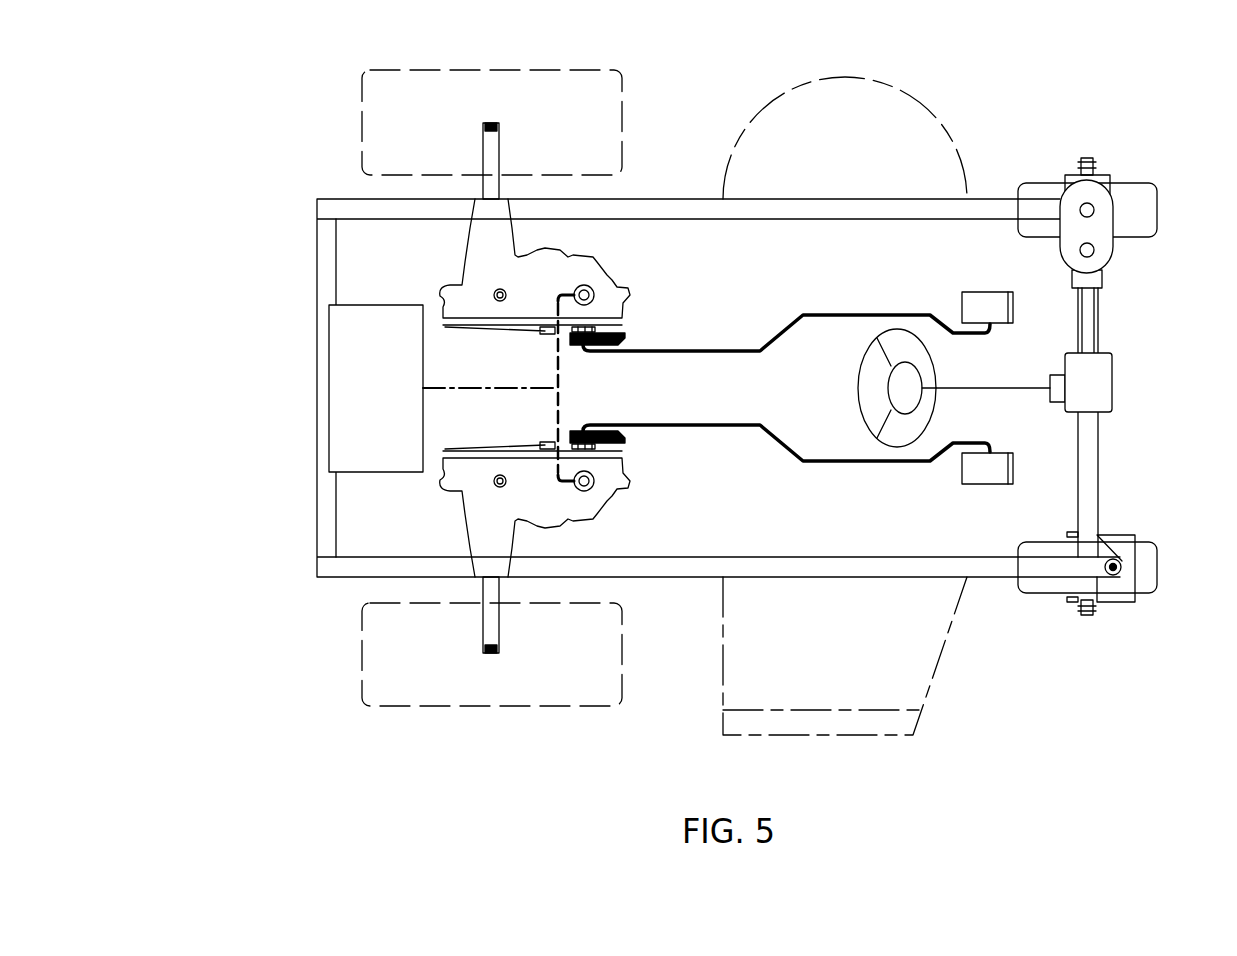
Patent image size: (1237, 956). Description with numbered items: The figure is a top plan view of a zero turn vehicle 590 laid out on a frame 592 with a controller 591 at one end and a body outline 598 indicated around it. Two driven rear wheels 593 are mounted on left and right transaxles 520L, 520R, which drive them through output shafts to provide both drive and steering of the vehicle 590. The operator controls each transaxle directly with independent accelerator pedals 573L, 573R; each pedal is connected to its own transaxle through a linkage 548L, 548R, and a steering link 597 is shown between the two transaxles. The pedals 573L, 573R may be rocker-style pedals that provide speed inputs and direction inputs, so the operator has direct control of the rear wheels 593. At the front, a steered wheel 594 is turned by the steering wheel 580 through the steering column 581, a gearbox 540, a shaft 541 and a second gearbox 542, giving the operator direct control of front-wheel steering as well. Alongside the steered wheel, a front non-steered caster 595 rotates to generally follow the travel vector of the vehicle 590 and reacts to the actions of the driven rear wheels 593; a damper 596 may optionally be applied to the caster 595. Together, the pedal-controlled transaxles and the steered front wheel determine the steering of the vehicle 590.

The zero turn vehicle 590 is at (233, 111).
The controller 591 is at (395, 452).
The frame 592 is at (686, 199).
The rear wheels 593 is at (548, 70).
The front steered wheel 594 is at (1157, 205).
The front non-steered caster 595 is at (1157, 565).
The damper 596 is at (1117, 576).
The steering link 597 is at (440, 388).
The body 598 is at (765, 96).
The left transaxle 520L is at (470, 250).
The right transaxle 520R is at (466, 526).
The gearbox 540 is at (1112, 383).
The shaft 541 is at (1090, 320).
The gearbox 542 is at (1090, 193).
The left linkage 548L is at (860, 315).
The right linkage 548R is at (867, 462).
The left accelerator pedal 573L is at (990, 292).
The right accelerator pedal 573R is at (990, 484).
The steering wheel 580 is at (857, 388).
The steering column 581 is at (985, 388).